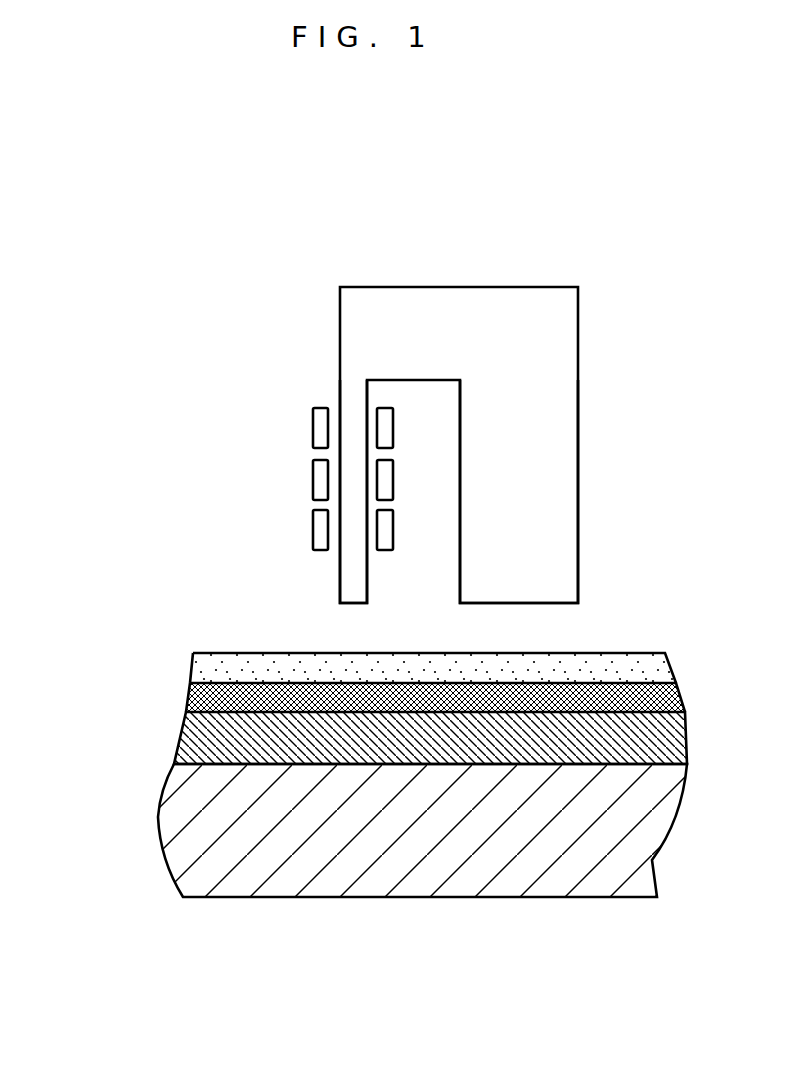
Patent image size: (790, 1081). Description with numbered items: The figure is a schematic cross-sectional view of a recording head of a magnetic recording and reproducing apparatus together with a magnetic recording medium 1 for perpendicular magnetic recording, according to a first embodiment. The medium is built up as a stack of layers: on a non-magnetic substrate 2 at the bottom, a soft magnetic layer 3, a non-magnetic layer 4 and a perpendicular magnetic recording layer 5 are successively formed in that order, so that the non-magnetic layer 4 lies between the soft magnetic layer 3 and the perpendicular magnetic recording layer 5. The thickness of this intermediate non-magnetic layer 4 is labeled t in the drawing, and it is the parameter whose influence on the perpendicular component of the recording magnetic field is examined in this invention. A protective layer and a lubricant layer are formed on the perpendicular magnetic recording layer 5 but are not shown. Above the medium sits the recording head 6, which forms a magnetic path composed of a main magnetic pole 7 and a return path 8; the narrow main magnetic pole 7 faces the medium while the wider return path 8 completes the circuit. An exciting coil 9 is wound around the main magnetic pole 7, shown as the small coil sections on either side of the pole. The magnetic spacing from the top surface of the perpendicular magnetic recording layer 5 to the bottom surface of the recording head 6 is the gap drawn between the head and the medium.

The magnetic recording medium 1 is at (363, 759).
The non-magnetic substrate 2 is at (397, 830).
The soft magnetic layer 3 is at (203, 737).
The non-magnetic layer 4 is at (193, 697).
The perpendicular magnetic recording layer 5 is at (196, 667).
The recording head 6 is at (658, 293).
The main magnetic pole 7 is at (352, 580).
The return path 8 is at (552, 495).
The exciting coil 9 is at (313, 425).